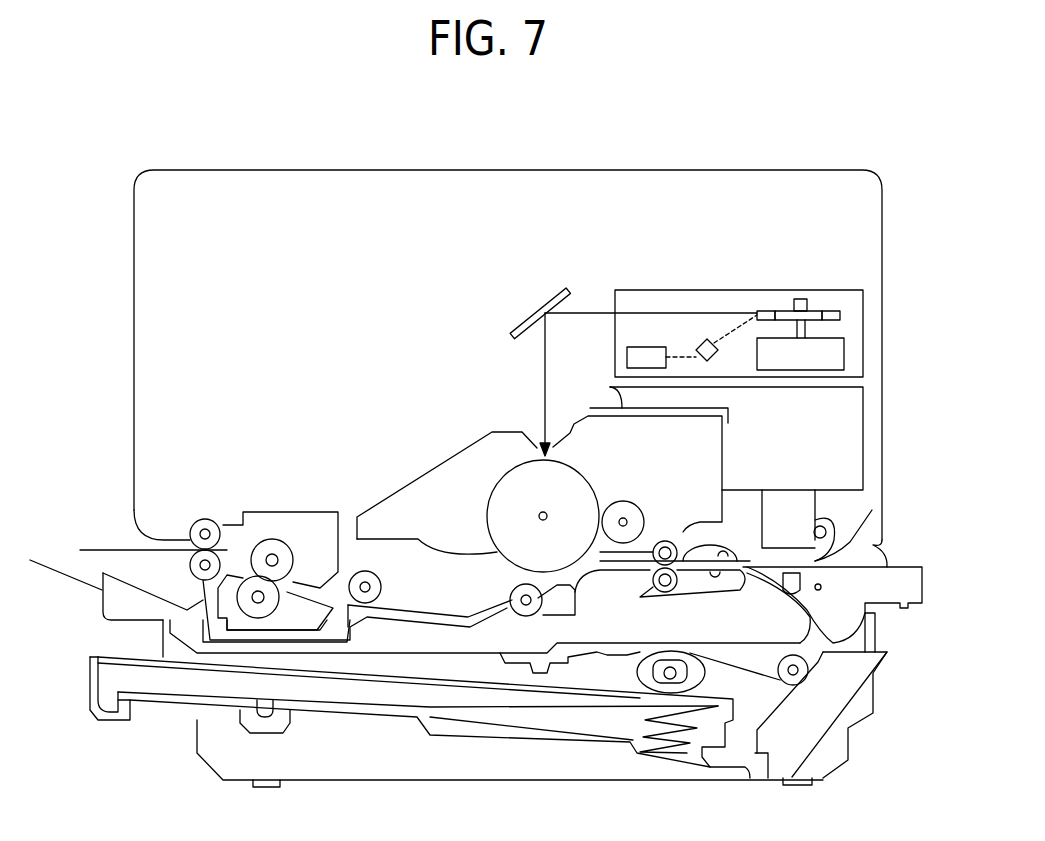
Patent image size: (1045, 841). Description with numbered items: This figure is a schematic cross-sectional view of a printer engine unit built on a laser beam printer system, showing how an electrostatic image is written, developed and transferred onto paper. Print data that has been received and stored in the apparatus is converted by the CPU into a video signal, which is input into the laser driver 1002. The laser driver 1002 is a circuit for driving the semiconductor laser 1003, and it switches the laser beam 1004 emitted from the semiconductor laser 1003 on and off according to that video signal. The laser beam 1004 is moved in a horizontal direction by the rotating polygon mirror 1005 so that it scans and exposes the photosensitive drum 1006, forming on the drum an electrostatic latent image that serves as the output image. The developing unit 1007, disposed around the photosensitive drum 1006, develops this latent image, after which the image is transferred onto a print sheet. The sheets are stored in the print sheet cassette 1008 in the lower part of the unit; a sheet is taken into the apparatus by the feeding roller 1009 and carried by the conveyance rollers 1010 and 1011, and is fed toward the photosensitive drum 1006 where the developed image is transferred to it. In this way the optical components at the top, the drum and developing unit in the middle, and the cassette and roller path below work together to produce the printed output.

The laser driver 1002 is at (650, 347).
The semiconductor laser 1003 is at (710, 360).
The laser beam 1004 is at (714, 317).
The rotating polygon mirror 1005 is at (837, 310).
The photosensitive drum 1006 is at (487, 512).
The developing unit 1007 is at (403, 485).
The print sheet cassette 1008 is at (90, 670).
The feeding roller 1009 is at (660, 660).
The conveyance roller 1010 is at (807, 675).
The conveyance roller 1011 is at (677, 592).